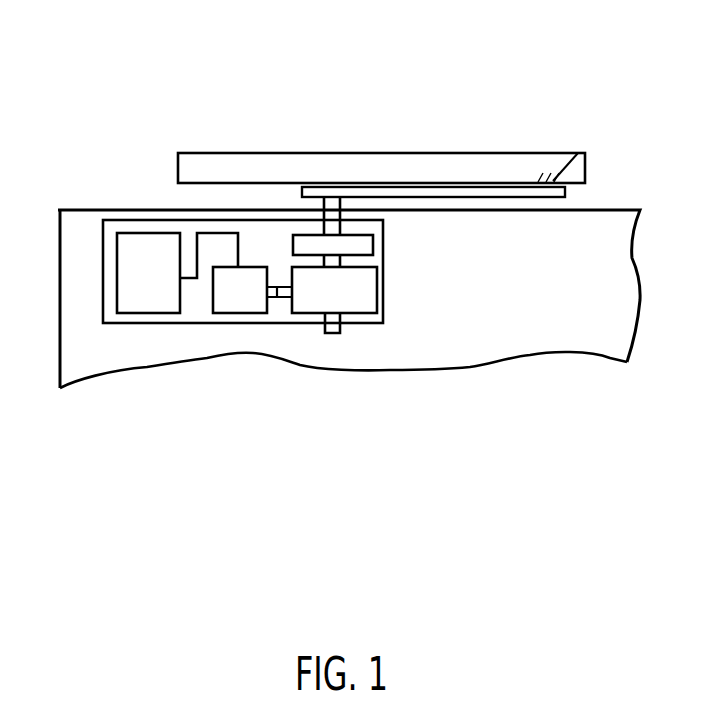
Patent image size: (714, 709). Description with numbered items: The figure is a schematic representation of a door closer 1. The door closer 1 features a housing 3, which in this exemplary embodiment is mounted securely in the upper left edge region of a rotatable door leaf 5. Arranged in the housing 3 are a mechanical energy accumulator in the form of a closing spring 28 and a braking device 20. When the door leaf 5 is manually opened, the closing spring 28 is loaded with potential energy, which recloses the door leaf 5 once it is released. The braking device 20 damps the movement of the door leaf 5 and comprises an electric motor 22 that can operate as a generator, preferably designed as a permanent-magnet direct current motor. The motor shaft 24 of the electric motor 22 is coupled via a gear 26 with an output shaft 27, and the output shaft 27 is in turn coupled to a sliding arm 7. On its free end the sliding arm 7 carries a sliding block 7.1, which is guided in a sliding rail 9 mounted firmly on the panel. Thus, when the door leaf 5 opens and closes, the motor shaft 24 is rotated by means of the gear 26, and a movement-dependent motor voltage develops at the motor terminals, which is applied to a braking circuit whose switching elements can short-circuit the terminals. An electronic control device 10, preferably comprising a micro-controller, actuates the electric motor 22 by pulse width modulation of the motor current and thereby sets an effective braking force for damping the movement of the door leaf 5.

The door closer 1 is at (86, 182).
The housing 3 is at (150, 325).
The door leaf 5 is at (620, 282).
The sliding arm 7 is at (587, 177).
The sliding block 7.1 is at (578, 153).
The sliding rail 9 is at (412, 153).
The electronic control device 10 is at (143, 240).
The braking device 20 is at (388, 358).
The electric motor 22 is at (230, 300).
The motor shaft 24 is at (277, 297).
The gear 26 is at (370, 292).
The output shaft 27 is at (335, 333).
The closing spring 28 is at (367, 242).